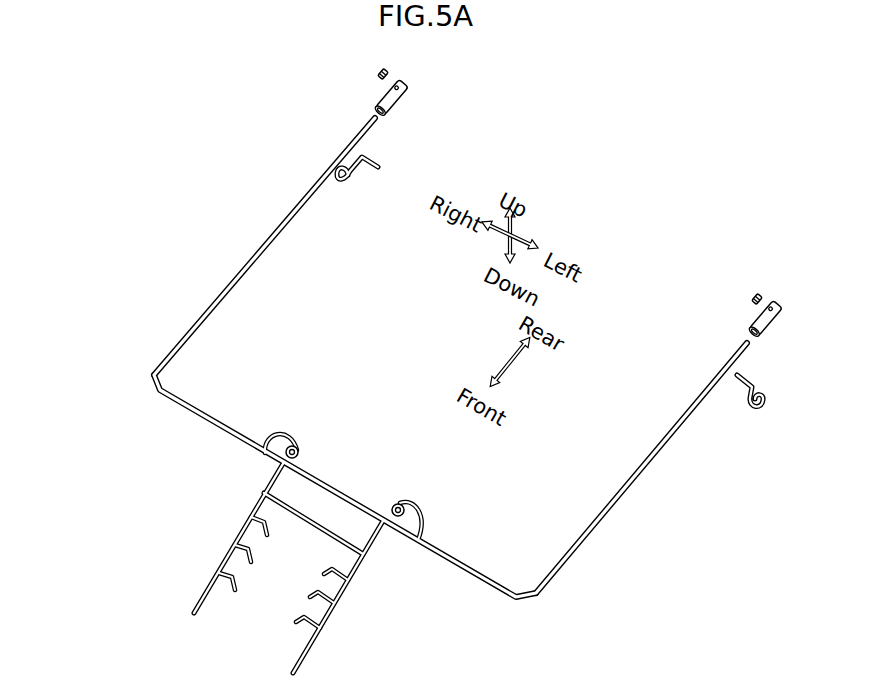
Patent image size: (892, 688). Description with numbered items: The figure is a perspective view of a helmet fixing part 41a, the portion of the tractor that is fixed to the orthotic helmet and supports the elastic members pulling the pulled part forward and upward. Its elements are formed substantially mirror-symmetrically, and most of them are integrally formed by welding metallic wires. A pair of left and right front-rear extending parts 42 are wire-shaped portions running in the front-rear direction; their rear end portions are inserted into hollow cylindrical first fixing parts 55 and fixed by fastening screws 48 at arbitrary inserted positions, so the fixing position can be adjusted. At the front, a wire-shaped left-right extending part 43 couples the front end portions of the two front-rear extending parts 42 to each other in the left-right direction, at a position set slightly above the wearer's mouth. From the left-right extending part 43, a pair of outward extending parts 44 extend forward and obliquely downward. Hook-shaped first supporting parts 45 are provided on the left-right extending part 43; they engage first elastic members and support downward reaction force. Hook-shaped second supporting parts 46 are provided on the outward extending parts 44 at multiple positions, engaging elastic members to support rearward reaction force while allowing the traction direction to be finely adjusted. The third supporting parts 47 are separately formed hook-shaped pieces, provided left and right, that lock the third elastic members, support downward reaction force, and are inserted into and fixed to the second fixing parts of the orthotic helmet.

The seat frame (wire frame) 41a is at (408, 395).
The front-rear extending part 42 is at (258, 263).
The left-right extending part 43 is at (330, 497).
The outward extending part 44 is at (187, 559).
The first supporting part 45 is at (296, 440).
The second supporting part 46 is at (247, 547).
The third supporting part 47 is at (340, 170).
The fastening screw 48 is at (392, 73).
The first fixing part 55 is at (403, 102).